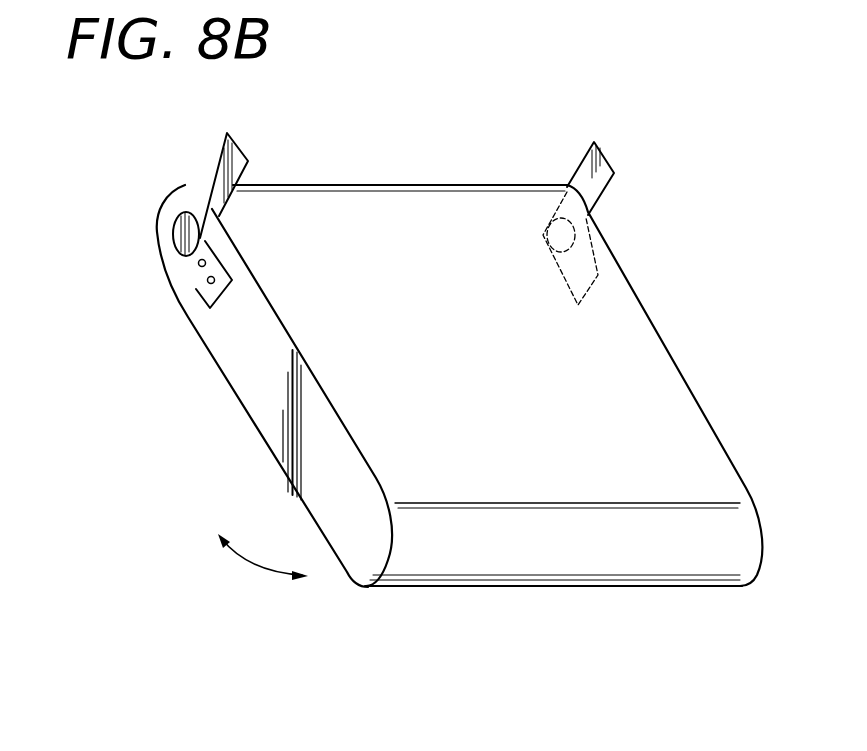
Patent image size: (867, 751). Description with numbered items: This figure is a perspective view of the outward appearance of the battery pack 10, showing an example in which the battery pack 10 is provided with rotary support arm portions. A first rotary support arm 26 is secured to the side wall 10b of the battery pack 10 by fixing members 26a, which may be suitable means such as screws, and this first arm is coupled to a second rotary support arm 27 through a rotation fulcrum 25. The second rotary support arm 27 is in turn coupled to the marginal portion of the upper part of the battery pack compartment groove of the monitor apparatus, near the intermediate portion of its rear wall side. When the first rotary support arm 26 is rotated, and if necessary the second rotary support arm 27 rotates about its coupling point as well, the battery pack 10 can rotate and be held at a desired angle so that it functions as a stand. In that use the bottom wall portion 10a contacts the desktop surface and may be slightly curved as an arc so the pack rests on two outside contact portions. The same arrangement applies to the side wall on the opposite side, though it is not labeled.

The battery pack 10 is at (587, 552).
The bottom wall portion 10a is at (447, 580).
The side wall 10b is at (283, 432).
The rotation fulcrum 25 is at (178, 233).
The first rotary support arm 26 is at (207, 298).
The fixing members 26a is at (208, 281).
The second rotary support arm 27 is at (218, 176).